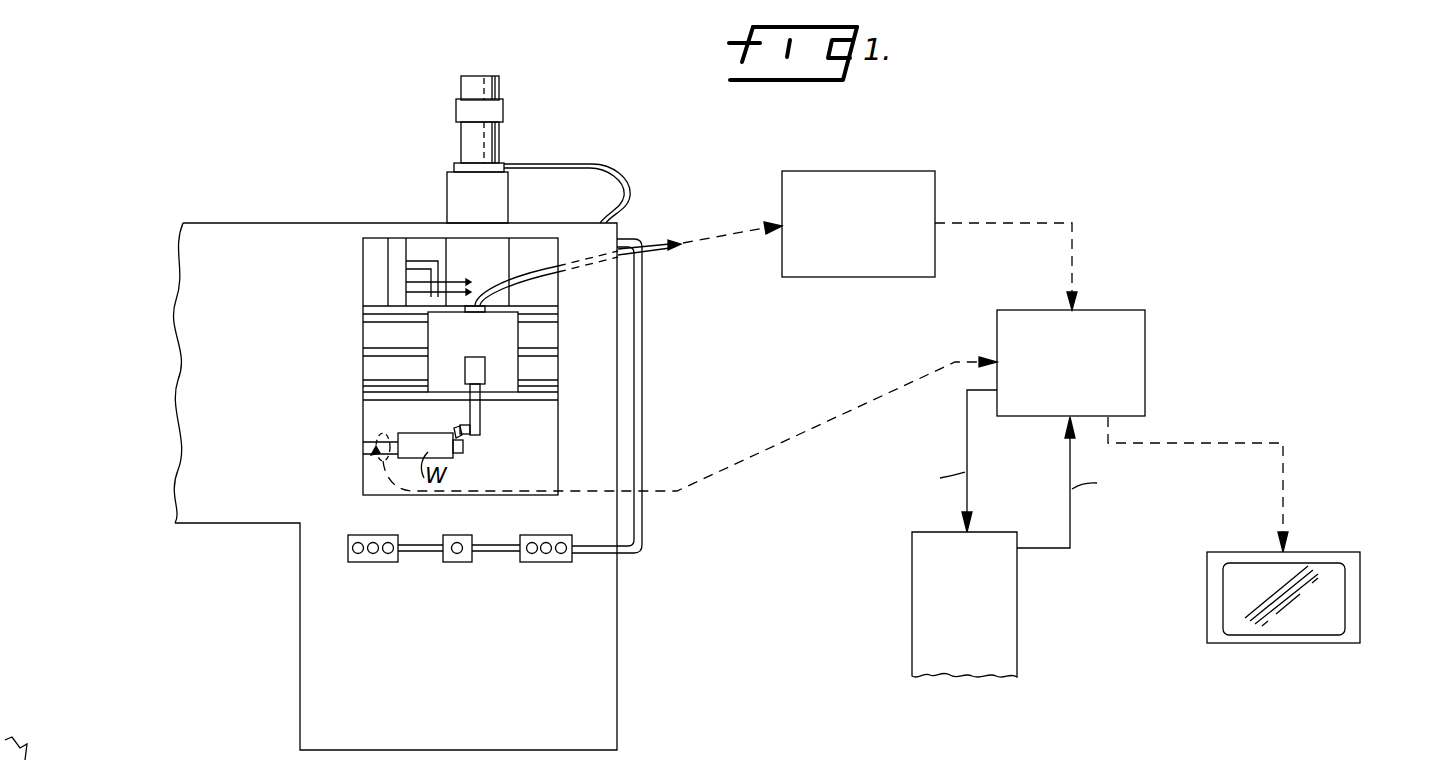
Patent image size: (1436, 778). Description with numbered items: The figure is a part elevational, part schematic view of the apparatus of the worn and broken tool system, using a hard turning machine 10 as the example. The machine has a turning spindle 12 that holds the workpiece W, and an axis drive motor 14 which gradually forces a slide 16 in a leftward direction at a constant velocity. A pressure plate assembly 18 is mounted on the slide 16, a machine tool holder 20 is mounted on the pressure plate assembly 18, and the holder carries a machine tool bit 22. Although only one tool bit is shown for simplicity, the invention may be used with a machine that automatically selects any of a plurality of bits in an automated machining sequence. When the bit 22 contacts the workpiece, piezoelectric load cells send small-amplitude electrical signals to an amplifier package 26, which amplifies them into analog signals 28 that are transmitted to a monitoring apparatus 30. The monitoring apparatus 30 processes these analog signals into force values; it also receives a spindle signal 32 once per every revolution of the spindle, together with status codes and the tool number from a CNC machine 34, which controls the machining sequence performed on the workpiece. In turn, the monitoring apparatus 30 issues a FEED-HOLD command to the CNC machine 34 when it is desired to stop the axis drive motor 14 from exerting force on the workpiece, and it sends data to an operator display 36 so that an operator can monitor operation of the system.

The hard turning machine 10 is at (313, 667).
The turning spindle 12 is at (362, 447).
The axis drive motor 14 is at (500, 84).
The slide 16 is at (372, 336).
The pressure plate assembly 18 is at (511, 343).
The machine tool holder 20 is at (481, 412).
The machine tool bit 22 is at (456, 427).
The amplifier package 26 is at (856, 278).
The analog signals 28 is at (985, 223).
The monitoring apparatus 30 is at (1147, 361).
The spindle signal 32 is at (845, 406).
The CNC machine 34 is at (1019, 630).
The operator display 36 is at (1355, 552).